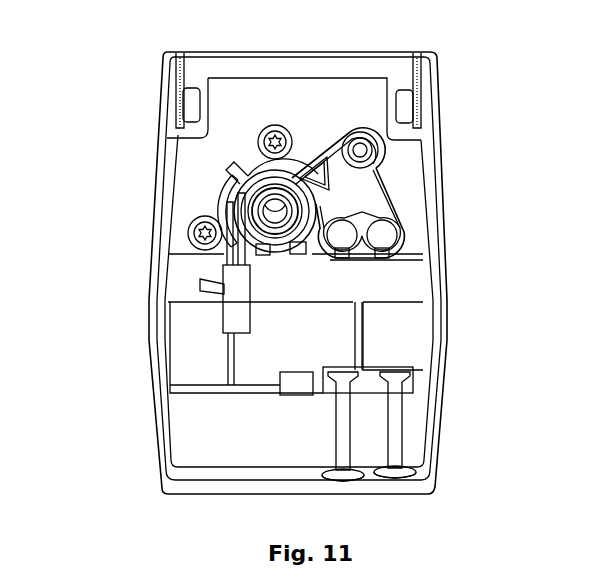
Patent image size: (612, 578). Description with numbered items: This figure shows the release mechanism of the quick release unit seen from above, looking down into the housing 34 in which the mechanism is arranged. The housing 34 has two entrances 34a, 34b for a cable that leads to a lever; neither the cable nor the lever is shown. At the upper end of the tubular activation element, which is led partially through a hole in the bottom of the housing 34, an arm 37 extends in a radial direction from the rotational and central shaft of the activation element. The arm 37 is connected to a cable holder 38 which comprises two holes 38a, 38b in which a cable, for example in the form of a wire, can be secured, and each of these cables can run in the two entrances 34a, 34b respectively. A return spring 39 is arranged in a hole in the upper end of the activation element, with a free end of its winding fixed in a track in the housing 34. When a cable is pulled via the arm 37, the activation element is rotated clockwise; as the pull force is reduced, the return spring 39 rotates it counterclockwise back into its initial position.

The housing 34 is at (90, 241).
The entrance 34a is at (342, 422).
The entrance 34b is at (395, 410).
The arm 37 is at (335, 162).
The cable holder 38 is at (400, 202).
The hole 38a is at (345, 237).
The hole 38b is at (385, 237).
The return spring 39 is at (240, 216).